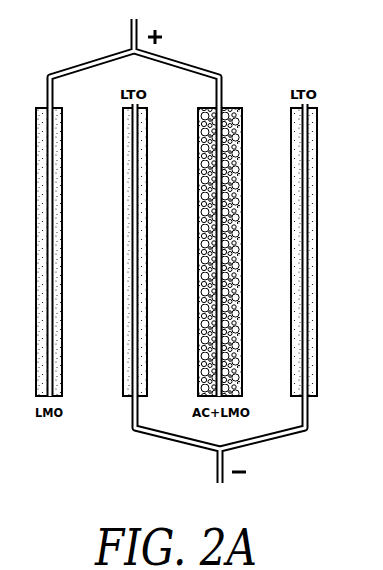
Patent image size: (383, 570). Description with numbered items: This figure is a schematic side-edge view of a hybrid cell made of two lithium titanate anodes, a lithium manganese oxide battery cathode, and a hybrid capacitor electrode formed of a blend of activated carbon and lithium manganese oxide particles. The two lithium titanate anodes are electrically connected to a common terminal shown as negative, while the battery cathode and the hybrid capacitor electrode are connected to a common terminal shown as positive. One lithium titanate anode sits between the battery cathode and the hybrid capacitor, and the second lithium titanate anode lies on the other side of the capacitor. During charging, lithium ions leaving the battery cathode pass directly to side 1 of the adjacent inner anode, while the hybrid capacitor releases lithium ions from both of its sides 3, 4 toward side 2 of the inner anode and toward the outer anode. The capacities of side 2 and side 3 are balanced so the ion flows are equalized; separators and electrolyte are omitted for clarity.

The side 1 of the adjacent LTO anode 1 is at (120, 252).
The side 2 of the bounded LTO anode 2 is at (147, 252).
The side 3 of the hybrid AC+LMO capacitor electrode 3 is at (201, 252).
The side 4 of the hybrid capacitor 4 is at (237, 252).